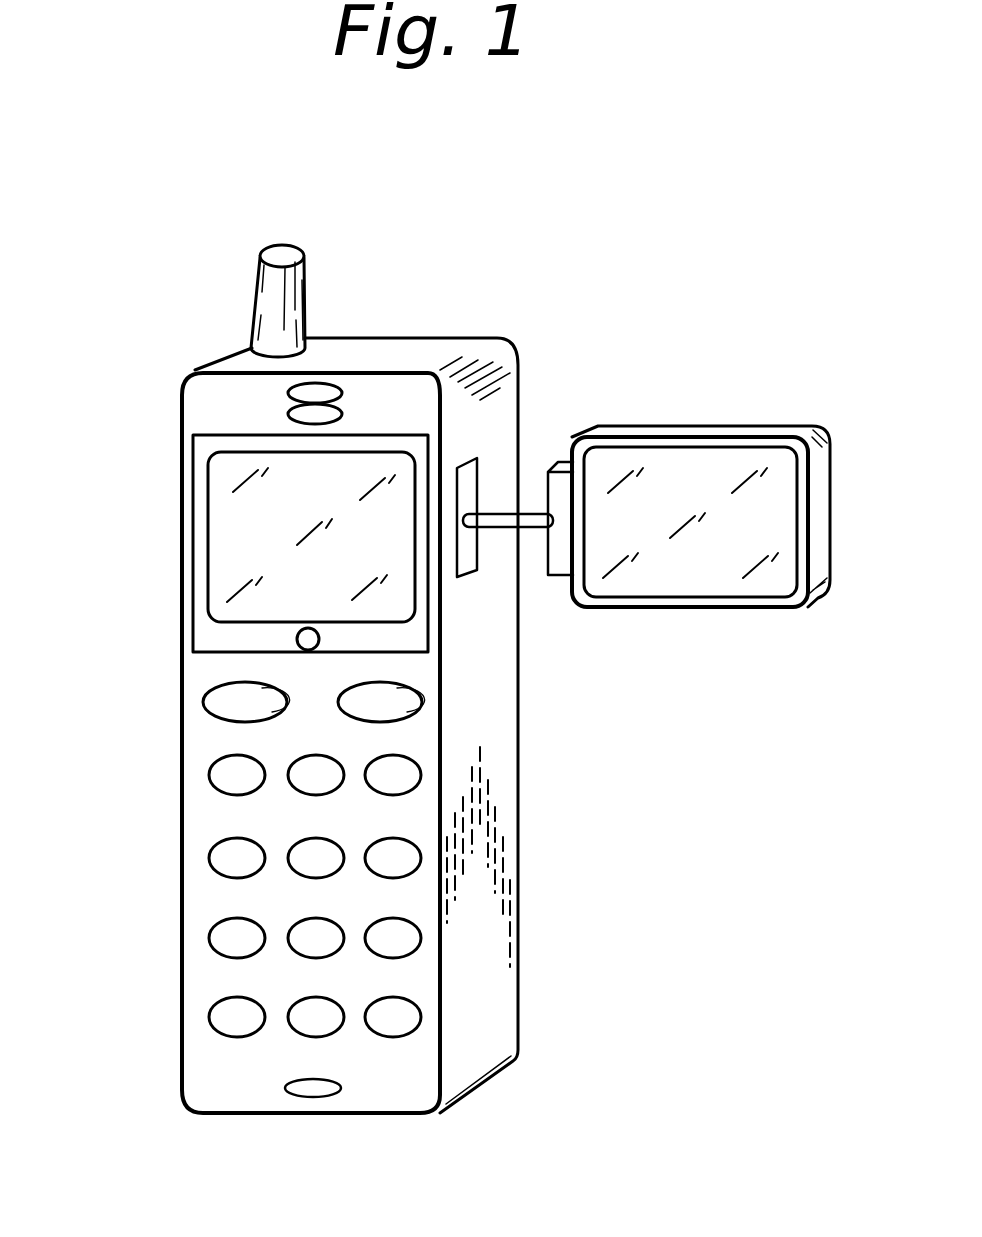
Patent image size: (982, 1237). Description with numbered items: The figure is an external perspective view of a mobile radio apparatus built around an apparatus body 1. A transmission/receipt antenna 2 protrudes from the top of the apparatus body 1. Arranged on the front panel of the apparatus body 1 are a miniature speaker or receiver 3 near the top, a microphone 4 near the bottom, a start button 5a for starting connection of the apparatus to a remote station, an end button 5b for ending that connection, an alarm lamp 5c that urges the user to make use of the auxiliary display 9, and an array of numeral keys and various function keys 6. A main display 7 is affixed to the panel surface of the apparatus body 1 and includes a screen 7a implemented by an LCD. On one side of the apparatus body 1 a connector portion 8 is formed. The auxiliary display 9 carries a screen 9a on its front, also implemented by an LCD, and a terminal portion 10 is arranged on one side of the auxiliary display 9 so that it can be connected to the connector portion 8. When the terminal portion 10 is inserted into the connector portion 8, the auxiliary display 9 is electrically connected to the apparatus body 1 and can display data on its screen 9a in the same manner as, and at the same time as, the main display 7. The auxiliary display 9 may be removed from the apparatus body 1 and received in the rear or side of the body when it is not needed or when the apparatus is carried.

The apparatus body 1 is at (518, 965).
The transmission/receipt antenna 2 is at (268, 297).
The miniature speaker or receiver 3 is at (322, 390).
The microphone 4 is at (317, 1092).
The start button 5a is at (227, 702).
The end button 5b is at (404, 703).
The alarm lamp 5c is at (298, 639).
The numeral keys and various function keys 6 is at (160, 1027).
The main display 7 is at (193, 528).
The screen 7a is at (247, 497).
The connector portion 8 is at (466, 482).
The auxiliary display 9 is at (827, 562).
The screen 9a is at (774, 500).
The terminal portion 10 is at (560, 565).